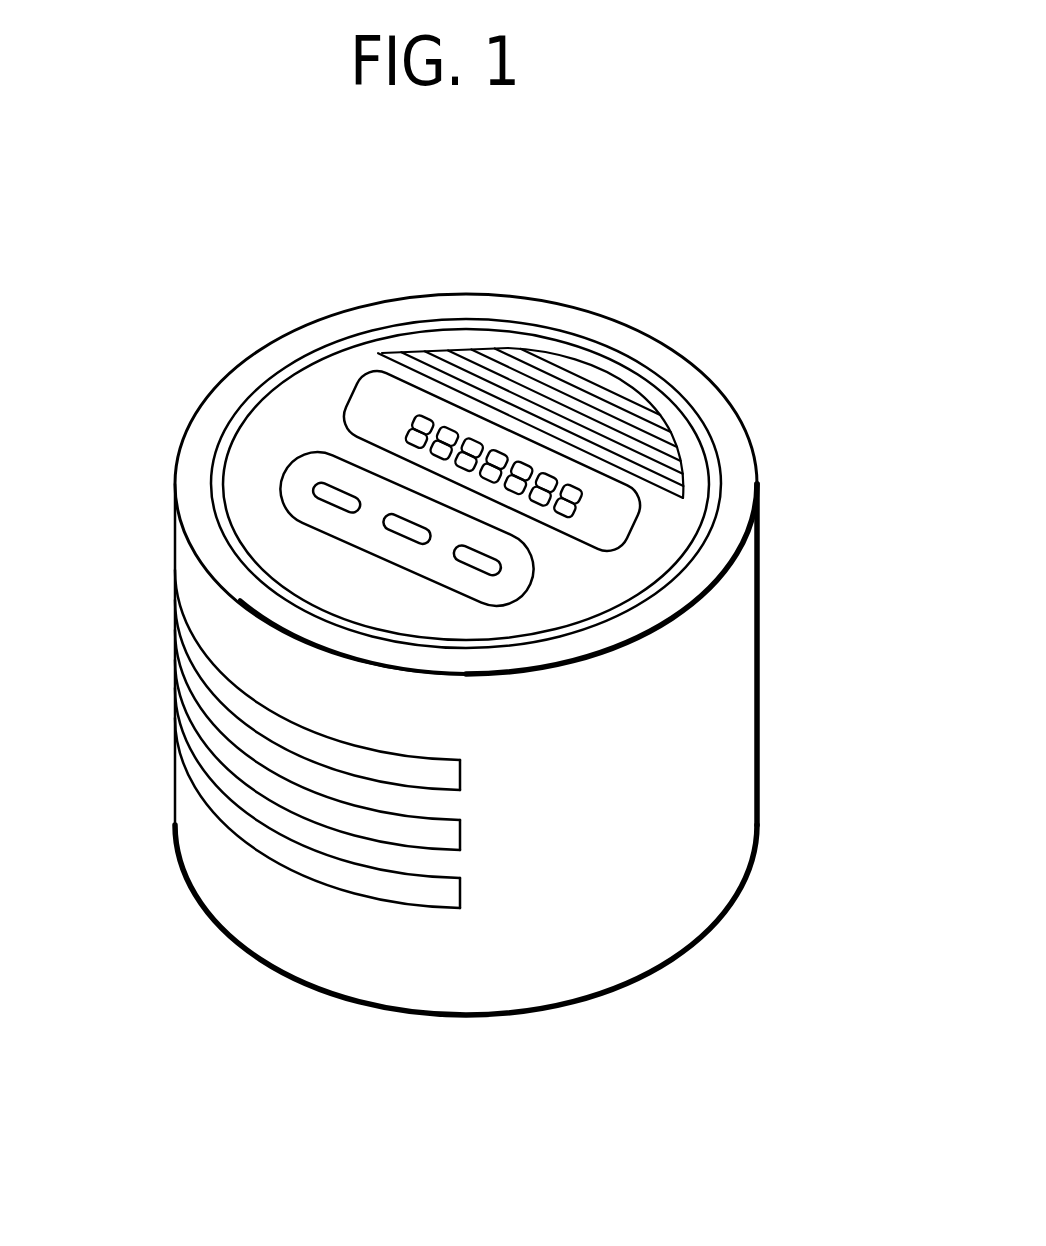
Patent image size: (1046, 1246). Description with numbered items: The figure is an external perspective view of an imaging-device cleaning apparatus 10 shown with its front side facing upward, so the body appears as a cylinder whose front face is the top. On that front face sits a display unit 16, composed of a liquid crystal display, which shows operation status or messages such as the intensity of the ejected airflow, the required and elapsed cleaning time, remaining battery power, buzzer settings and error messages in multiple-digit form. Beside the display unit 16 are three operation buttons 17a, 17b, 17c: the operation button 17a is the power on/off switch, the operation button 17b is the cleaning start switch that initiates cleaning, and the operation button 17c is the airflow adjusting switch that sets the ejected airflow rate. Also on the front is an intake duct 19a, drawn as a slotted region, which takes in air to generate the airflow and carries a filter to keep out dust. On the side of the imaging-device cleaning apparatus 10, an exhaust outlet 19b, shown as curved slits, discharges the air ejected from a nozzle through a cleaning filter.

The imaging-device cleaning apparatus 10 is at (758, 716).
The display unit 16 is at (620, 513).
The operation button 17a is at (320, 497).
The operation button 17b is at (395, 530).
The operation button 17c is at (460, 560).
The intake duct 19a is at (590, 395).
The exhaust outlet 19b is at (350, 850).